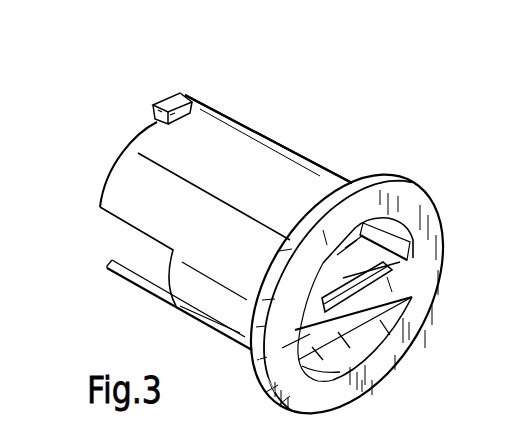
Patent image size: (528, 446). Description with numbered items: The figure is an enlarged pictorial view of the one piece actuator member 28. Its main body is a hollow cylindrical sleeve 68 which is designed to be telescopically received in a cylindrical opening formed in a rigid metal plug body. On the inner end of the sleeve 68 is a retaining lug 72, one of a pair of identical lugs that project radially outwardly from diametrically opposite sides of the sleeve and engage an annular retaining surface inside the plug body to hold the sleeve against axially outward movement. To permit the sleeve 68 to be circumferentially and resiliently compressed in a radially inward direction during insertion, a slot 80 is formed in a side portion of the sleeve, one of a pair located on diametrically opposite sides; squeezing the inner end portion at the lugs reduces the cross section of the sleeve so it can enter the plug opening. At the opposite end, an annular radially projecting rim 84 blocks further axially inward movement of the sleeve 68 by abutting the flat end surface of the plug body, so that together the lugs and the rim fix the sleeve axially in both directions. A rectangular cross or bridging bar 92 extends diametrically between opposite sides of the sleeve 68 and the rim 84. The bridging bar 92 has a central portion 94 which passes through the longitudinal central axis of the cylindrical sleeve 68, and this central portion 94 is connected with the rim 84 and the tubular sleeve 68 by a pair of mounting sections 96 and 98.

The actuator member 28 is at (241, 114).
The hollow cylindrical sleeve 68 is at (277, 163).
The retaining lug 72 is at (168, 105).
The slot 80 is at (142, 257).
The annular radially projecting rim 84 is at (396, 194).
The bridging bar 92 is at (357, 333).
The central portion of the bridging bar 94 is at (350, 278).
The mounting section 96 is at (407, 277).
The mounting section 98 is at (262, 366).